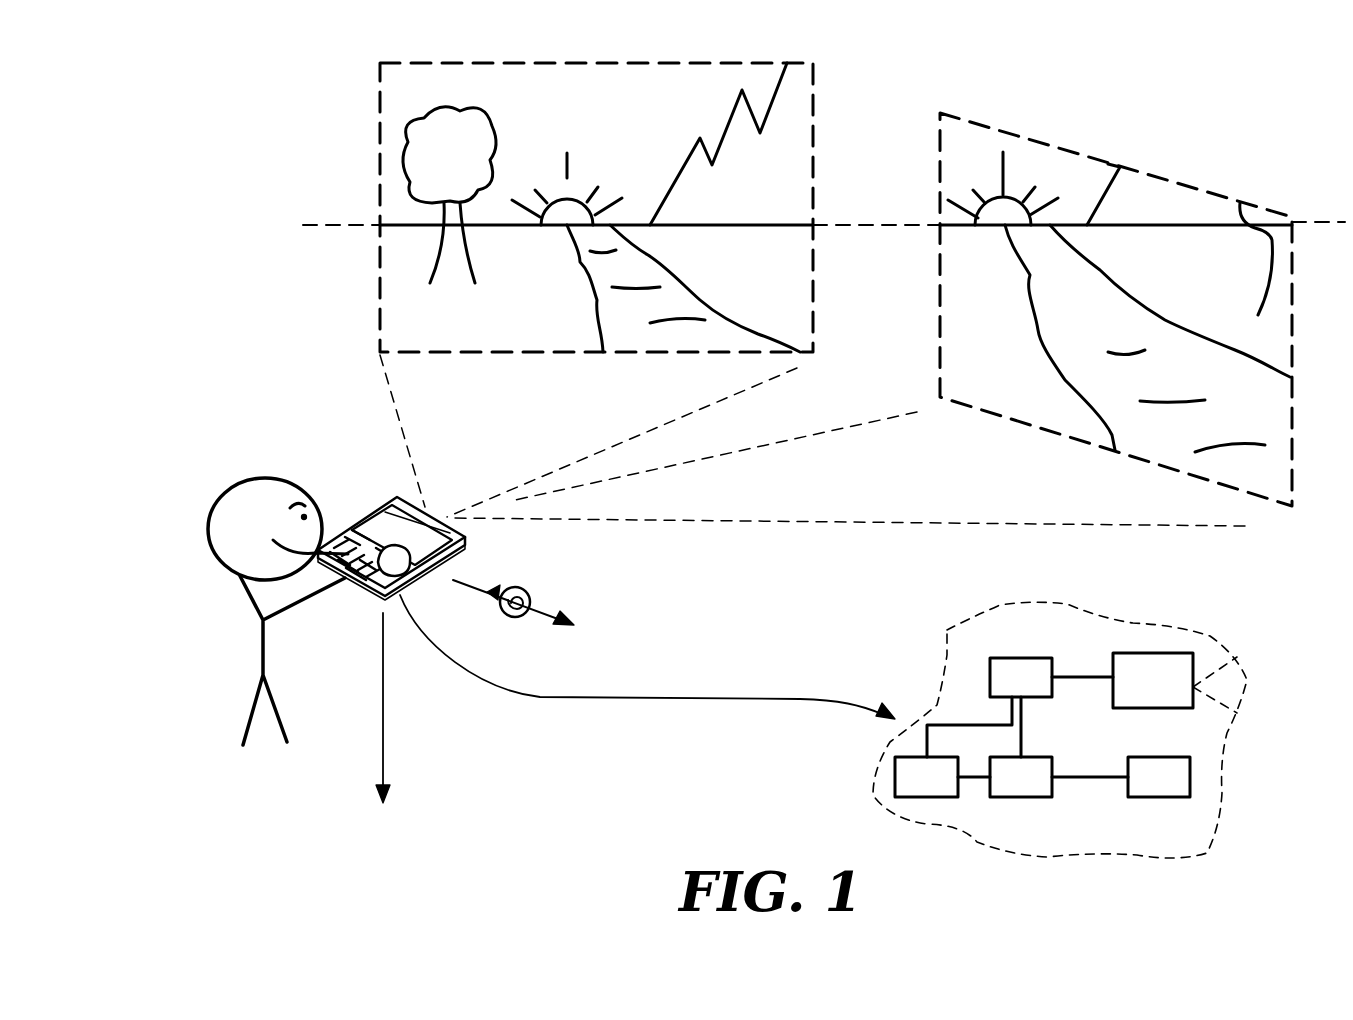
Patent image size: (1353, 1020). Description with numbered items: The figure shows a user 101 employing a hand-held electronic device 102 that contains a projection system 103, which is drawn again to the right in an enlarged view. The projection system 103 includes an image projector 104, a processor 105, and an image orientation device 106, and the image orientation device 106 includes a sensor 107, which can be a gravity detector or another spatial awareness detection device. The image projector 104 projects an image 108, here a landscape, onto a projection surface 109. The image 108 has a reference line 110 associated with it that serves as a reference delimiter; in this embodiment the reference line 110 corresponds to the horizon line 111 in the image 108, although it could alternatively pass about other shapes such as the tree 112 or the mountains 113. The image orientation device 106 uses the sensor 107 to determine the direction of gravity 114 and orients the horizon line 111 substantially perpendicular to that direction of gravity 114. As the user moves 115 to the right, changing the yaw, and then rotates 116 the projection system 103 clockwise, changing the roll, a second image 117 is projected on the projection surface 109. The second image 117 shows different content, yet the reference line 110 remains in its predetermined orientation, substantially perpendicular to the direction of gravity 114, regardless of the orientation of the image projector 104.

The user 101 is at (268, 638).
The hand-held electronic device 102 is at (375, 505).
The projection system 103 is at (943, 673).
The image projector 104 is at (1153, 680).
The processor 105 is at (1022, 677).
The image orientation device 106 is at (1022, 777).
The sensor 107 is at (1150, 777).
The image 108 is at (380, 150).
The projection surface 109 is at (893, 298).
The reference line 110 is at (343, 222).
The horizon line 111 is at (697, 227).
The tree 112 is at (475, 147).
The mountains 113 is at (733, 108).
The direction of gravity 114 is at (384, 697).
The user movement 115 is at (553, 613).
The rotation 116 is at (508, 592).
The second image 117 is at (940, 172).